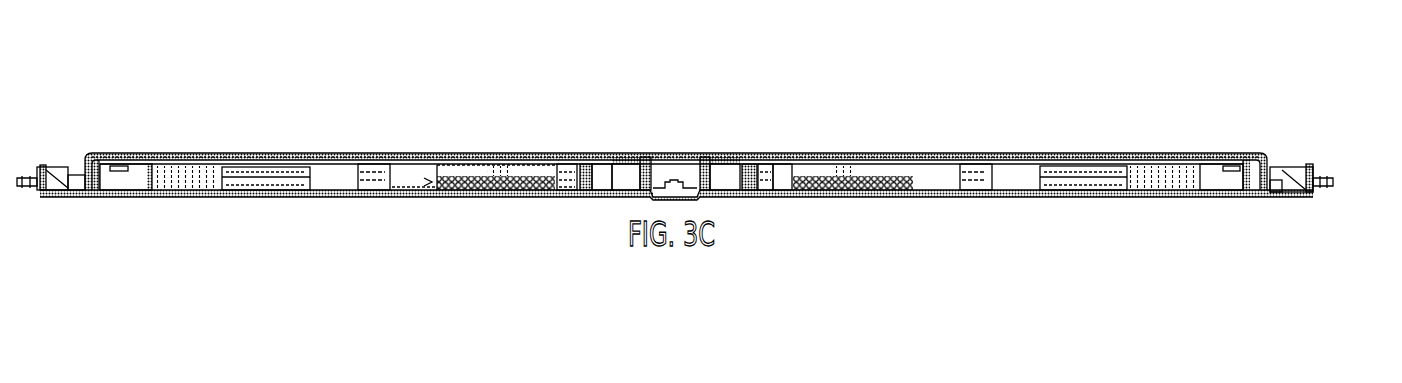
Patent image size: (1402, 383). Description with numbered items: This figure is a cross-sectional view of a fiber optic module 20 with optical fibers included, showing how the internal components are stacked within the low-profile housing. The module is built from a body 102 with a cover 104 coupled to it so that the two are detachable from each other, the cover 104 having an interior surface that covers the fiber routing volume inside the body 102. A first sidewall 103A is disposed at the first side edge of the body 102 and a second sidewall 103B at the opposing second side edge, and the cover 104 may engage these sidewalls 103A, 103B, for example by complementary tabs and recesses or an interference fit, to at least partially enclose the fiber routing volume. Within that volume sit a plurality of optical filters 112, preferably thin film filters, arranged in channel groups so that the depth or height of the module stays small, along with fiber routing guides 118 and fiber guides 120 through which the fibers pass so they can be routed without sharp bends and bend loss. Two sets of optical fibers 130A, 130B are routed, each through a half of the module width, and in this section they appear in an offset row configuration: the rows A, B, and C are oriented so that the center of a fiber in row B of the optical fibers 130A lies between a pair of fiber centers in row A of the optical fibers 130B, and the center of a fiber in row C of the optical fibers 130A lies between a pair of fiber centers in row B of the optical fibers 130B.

The device assembly 20 is at (1318, 130).
The body 102 is at (204, 170).
The cover 104 is at (1133, 157).
The first sidewall 103A is at (1215, 165).
The second sidewall 103B is at (100, 160).
The optical filters 112 is at (266, 168).
The fiber routing guides 118 is at (155, 166).
The fiber guides 120 is at (700, 160).
The optical fibers 130A is at (478, 170).
The optical fibers 130B is at (855, 170).
The row A is at (430, 190).
The row B is at (428, 182).
The row C is at (437, 172).